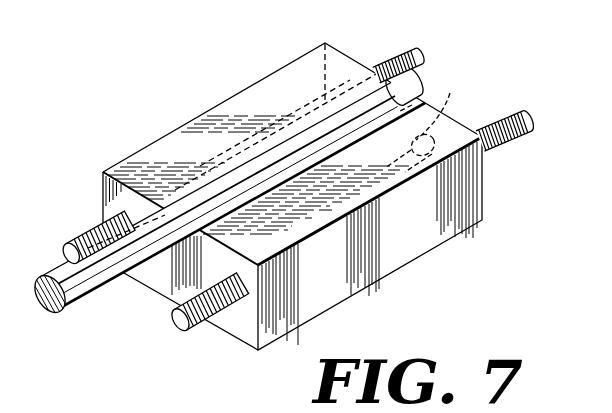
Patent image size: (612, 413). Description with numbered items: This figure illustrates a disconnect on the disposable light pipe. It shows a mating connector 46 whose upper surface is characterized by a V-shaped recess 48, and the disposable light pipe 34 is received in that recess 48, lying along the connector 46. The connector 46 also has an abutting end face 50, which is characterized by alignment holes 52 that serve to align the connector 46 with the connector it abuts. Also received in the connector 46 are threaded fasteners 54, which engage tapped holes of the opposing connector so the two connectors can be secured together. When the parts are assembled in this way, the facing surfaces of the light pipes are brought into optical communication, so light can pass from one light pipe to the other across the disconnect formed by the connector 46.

The disposable light pipe 34 is at (80, 303).
The mating connector 46 is at (451, 224).
The V-shaped recess 48 is at (421, 88).
The abutting end face 50 is at (484, 173).
The alignment holes 52 is at (450, 93).
The threaded fasteners 54 is at (199, 331).